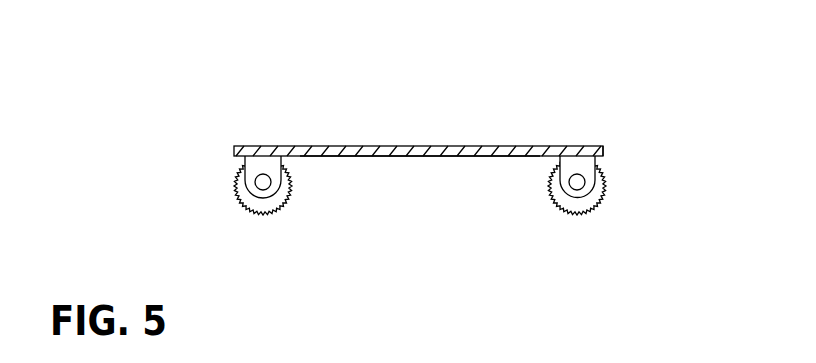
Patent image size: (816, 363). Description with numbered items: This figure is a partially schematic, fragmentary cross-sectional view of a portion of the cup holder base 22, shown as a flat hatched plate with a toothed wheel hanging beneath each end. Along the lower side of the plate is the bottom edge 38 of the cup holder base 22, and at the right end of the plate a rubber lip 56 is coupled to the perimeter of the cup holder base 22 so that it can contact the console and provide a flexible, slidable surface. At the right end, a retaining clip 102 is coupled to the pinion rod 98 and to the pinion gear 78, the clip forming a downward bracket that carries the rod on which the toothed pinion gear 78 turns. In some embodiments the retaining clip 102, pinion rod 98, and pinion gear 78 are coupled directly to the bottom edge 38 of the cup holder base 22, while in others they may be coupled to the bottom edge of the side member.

The cup holder base 22 is at (425, 145).
The bottom edge 38 is at (403, 157).
The retaining clip 102 is at (583, 165).
The rubber lip 56 is at (605, 152).
The pinion rod 98 is at (585, 182).
The pinion gear 78 is at (578, 195).